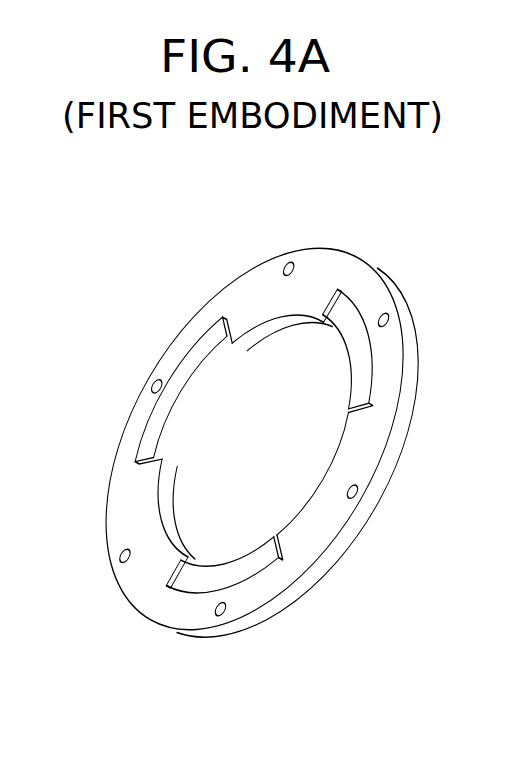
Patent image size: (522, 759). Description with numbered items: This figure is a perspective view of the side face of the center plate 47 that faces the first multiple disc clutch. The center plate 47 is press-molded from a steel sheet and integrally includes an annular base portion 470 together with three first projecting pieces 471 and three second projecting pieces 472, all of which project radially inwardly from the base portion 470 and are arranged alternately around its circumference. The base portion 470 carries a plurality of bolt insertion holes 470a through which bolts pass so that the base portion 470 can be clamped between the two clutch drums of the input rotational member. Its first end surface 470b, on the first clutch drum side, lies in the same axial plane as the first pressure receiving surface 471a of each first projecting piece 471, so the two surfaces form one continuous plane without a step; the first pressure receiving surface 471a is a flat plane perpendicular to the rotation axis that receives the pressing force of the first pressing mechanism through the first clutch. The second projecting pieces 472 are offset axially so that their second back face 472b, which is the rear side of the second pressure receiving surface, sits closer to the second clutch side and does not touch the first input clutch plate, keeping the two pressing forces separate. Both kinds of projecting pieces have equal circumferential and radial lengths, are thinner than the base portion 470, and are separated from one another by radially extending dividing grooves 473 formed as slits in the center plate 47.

The center plate 47 is at (386, 250).
The base portion 470 is at (408, 305).
The bolt insertion holes 470a is at (285, 255).
The first end surface 470b is at (147, 405).
The first projecting piece 471 is at (260, 330).
The first pressure receiving surface 471a is at (265, 312).
The second projecting piece 472 is at (350, 358).
The second back face 472b is at (345, 297).
The dividing grooves 473 is at (220, 320).